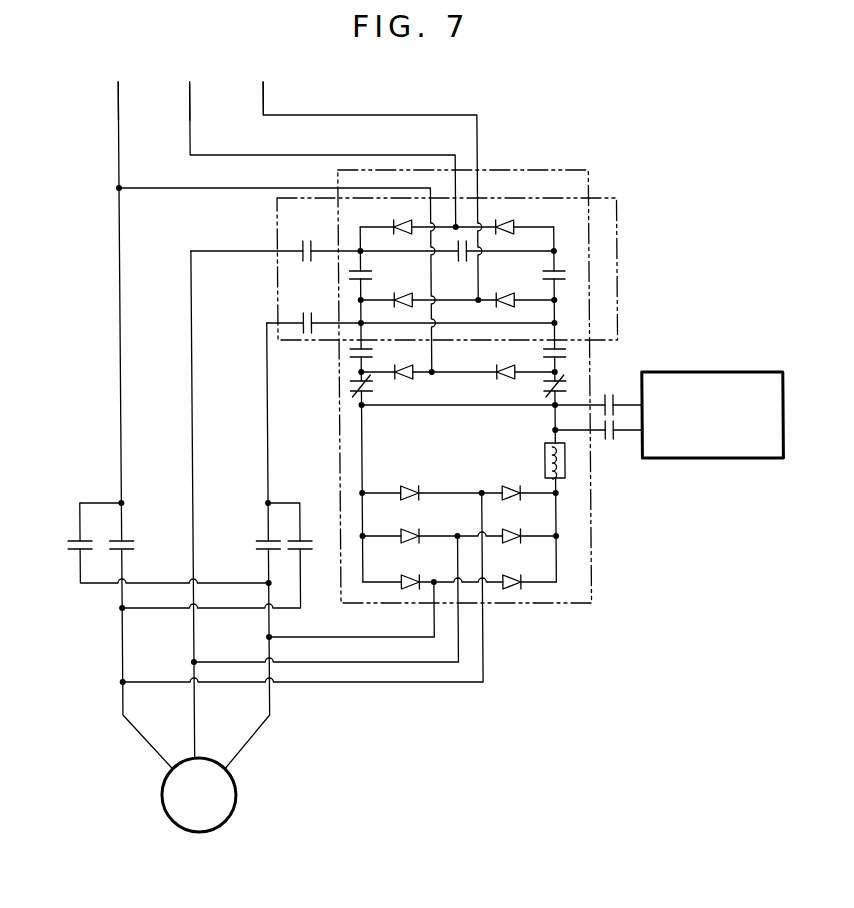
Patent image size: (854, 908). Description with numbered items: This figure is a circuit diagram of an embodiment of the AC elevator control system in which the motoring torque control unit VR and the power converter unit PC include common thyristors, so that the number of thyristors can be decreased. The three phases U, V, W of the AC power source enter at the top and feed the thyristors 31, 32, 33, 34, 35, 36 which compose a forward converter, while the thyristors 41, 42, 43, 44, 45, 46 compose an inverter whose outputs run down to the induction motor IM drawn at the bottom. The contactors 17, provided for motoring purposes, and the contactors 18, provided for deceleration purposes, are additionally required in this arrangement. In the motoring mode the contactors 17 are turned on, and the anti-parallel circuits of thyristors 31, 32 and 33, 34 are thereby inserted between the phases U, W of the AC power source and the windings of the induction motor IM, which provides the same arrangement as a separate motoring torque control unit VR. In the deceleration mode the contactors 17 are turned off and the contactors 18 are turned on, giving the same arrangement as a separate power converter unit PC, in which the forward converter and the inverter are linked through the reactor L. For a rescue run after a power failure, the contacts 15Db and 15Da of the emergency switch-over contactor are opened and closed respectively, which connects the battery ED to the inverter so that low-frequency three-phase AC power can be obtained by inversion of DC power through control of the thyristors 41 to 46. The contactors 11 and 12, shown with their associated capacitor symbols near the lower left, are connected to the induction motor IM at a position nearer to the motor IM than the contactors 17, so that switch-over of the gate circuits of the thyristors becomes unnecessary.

The AC power source phase U is at (118, 88).
The AC power source phase V is at (190, 88).
The AC power source phase W is at (263, 86).
The contactor 11 is at (145, 530).
The contactor 12 is at (64, 541).
The contactor for motoring purpose 17 is at (306, 238).
The contactor for deceleration purpose 18 is at (375, 270).
The thyristor 31 is at (393, 222).
The thyristor 32 is at (508, 222).
The thyristor 33 is at (395, 292).
The thyristor 34 is at (507, 292).
The thyristor 35 is at (412, 380).
The thyristor 36 is at (498, 368).
The thyristor 41 is at (405, 486).
The thyristor 42 is at (507, 486).
The thyristor 43 is at (405, 529).
The thyristor 44 is at (509, 529).
The thyristor 45 is at (405, 575).
The thyristor 46 is at (509, 575).
The contact of emergency switch-over contactor 15Da is at (605, 392).
The contact of emergency switch-over contactor 15Db is at (378, 390).
The reactor L is at (540, 458).
The motoring torque control unit VR is at (277, 242).
The power converter unit PC is at (562, 170).
The battery ED is at (713, 372).
The induction motor IM is at (231, 790).